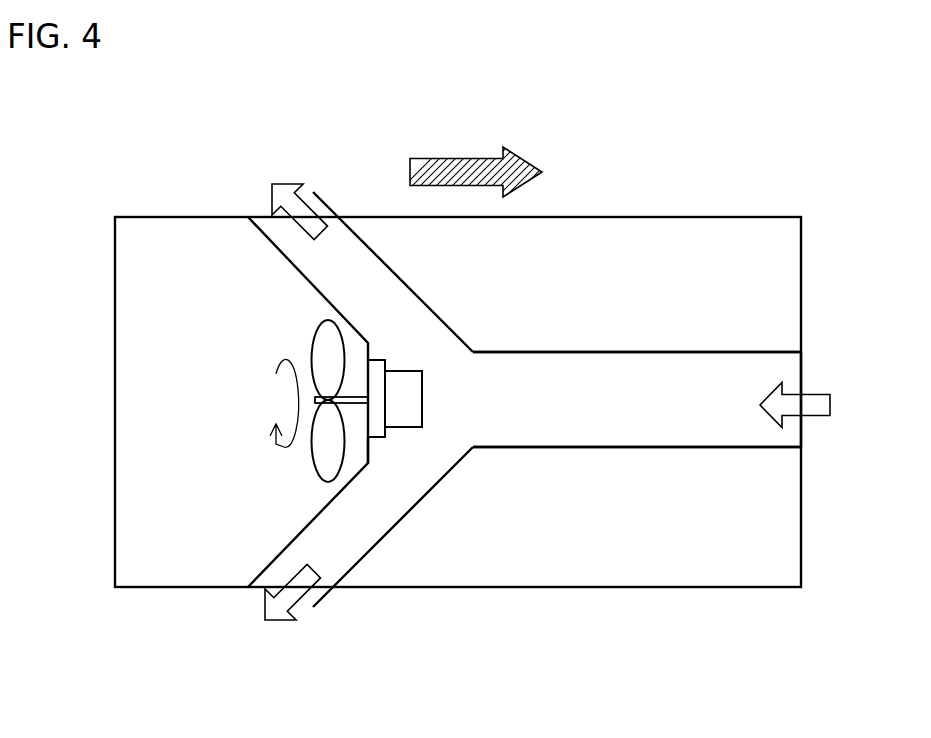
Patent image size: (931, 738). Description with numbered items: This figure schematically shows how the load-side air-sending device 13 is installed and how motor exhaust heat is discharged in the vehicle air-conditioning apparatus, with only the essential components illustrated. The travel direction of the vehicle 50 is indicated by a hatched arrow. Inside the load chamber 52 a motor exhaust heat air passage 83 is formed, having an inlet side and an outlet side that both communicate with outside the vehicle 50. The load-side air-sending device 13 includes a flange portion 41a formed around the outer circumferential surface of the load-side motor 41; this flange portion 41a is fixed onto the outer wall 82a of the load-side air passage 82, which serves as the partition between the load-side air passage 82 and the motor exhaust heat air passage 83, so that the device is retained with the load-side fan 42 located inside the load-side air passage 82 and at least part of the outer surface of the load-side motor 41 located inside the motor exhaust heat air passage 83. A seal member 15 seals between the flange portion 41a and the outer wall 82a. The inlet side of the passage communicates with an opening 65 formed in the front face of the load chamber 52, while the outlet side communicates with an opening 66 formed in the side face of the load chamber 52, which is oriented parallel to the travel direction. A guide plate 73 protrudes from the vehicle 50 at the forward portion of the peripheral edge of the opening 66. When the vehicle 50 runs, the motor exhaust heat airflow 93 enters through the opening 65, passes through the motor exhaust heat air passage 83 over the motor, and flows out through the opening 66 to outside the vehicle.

The vehicle 50 is at (185, 185).
The seal member 15 is at (370, 353).
The load chamber 52 is at (780, 217).
The load-side air passage 82 is at (763, 285).
The motor exhaust heat air passage 83 is at (760, 432).
The opening 65 is at (802, 360).
The motor exhaust heat airflow 93 is at (808, 407).
The opening 66 is at (263, 590).
The guide plate 73 is at (327, 593).
The outer wall 82a is at (368, 447).
The flange portion 41a is at (377, 390).
The load-side motor 41 is at (305, 485).
The load-side fan 42 is at (328, 463).
The load-side air-sending device 13 is at (310, 511).